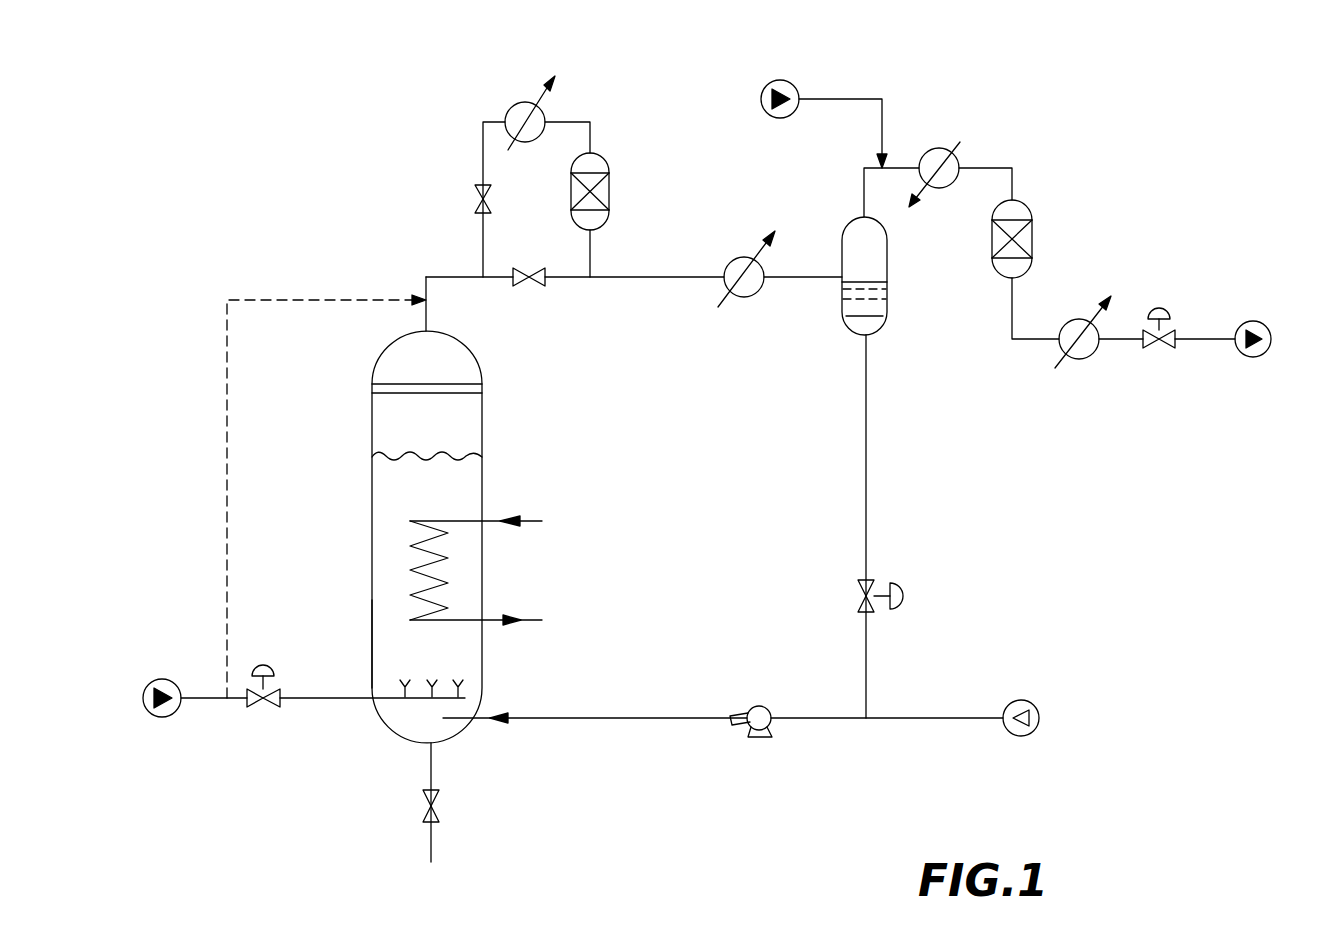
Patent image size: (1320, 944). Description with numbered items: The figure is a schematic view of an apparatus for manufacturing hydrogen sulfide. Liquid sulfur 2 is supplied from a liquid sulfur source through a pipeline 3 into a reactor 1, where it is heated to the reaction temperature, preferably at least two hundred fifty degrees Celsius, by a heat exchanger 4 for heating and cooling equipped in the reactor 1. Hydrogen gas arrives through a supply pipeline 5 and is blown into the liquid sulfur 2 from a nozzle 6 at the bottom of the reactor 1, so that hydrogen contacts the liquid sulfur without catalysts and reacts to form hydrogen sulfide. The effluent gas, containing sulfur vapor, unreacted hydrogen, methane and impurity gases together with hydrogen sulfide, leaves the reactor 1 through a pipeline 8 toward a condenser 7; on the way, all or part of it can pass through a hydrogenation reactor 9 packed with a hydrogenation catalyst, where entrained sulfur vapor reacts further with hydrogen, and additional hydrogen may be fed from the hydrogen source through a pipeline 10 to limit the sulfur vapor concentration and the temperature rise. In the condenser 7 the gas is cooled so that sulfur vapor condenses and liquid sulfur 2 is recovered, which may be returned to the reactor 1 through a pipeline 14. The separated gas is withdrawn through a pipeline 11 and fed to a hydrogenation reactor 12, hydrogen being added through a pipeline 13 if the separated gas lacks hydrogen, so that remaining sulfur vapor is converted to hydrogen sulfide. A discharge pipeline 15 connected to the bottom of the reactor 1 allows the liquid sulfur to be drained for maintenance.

The reactor 1 is at (372, 426).
The liquid sulfur 2 is at (372, 525).
The pipeline 3 is at (672, 719).
The heat exchanger 4 is at (448, 577).
The supply pipeline 5 is at (313, 699).
The nozzle 6 is at (463, 683).
The condenser 7 is at (842, 323).
The pipeline 8 is at (663, 278).
The hydrogenation reactor 9 is at (609, 195).
The pipeline 10 is at (227, 528).
The pipeline 11 is at (864, 182).
The hydrogenation reactor 12 is at (1032, 232).
The pipeline 13 is at (882, 120).
The pipeline 14 is at (866, 528).
The discharge pipeline 15 is at (431, 757).